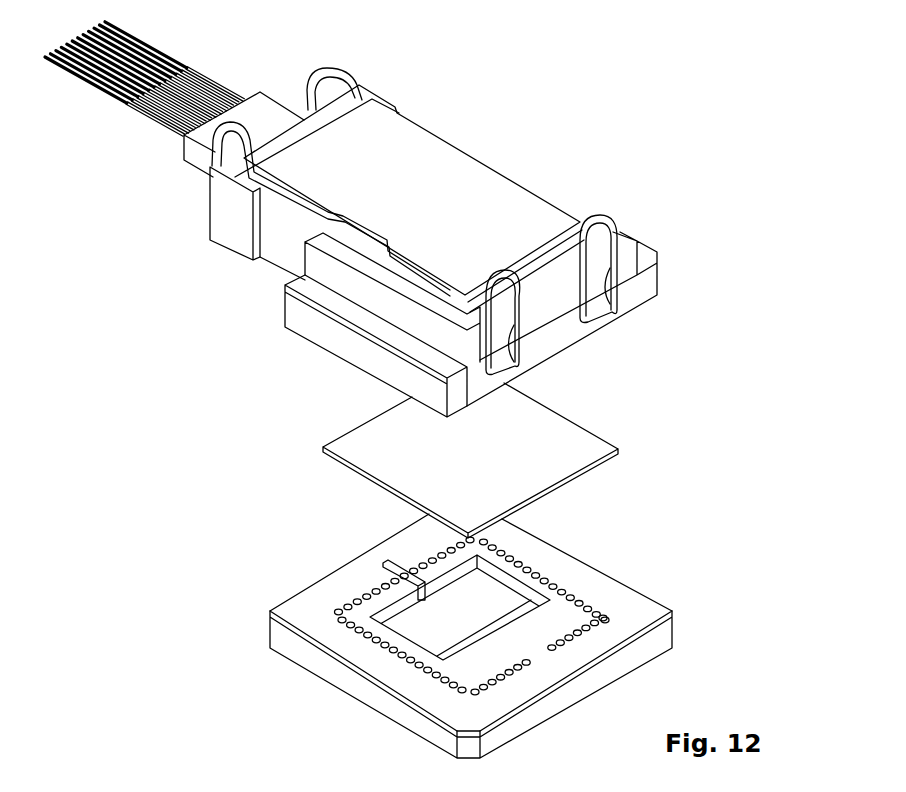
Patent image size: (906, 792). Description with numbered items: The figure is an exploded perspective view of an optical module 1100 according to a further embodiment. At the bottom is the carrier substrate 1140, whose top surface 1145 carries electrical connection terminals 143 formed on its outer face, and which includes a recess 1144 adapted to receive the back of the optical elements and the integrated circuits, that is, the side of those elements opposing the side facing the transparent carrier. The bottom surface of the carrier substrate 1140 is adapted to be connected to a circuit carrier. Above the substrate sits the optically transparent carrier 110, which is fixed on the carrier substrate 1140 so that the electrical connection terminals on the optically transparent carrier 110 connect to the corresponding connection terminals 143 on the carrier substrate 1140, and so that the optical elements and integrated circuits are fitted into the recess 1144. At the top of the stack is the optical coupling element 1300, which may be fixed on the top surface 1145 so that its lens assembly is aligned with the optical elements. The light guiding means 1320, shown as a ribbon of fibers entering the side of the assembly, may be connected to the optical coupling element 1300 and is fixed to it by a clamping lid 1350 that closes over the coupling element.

The optical connector assembly 1100 is at (631, 71).
The clamping lid 1350 is at (422, 150).
The light guiding means 1320 is at (210, 218).
The optical coupling element 1300 is at (326, 350).
The optically transparent carrier 110 is at (570, 432).
The carrier substrate 1140 is at (673, 635).
The top surface 1145 is at (300, 610).
The recess 1144 is at (405, 623).
The connection terminals 143 is at (560, 585).